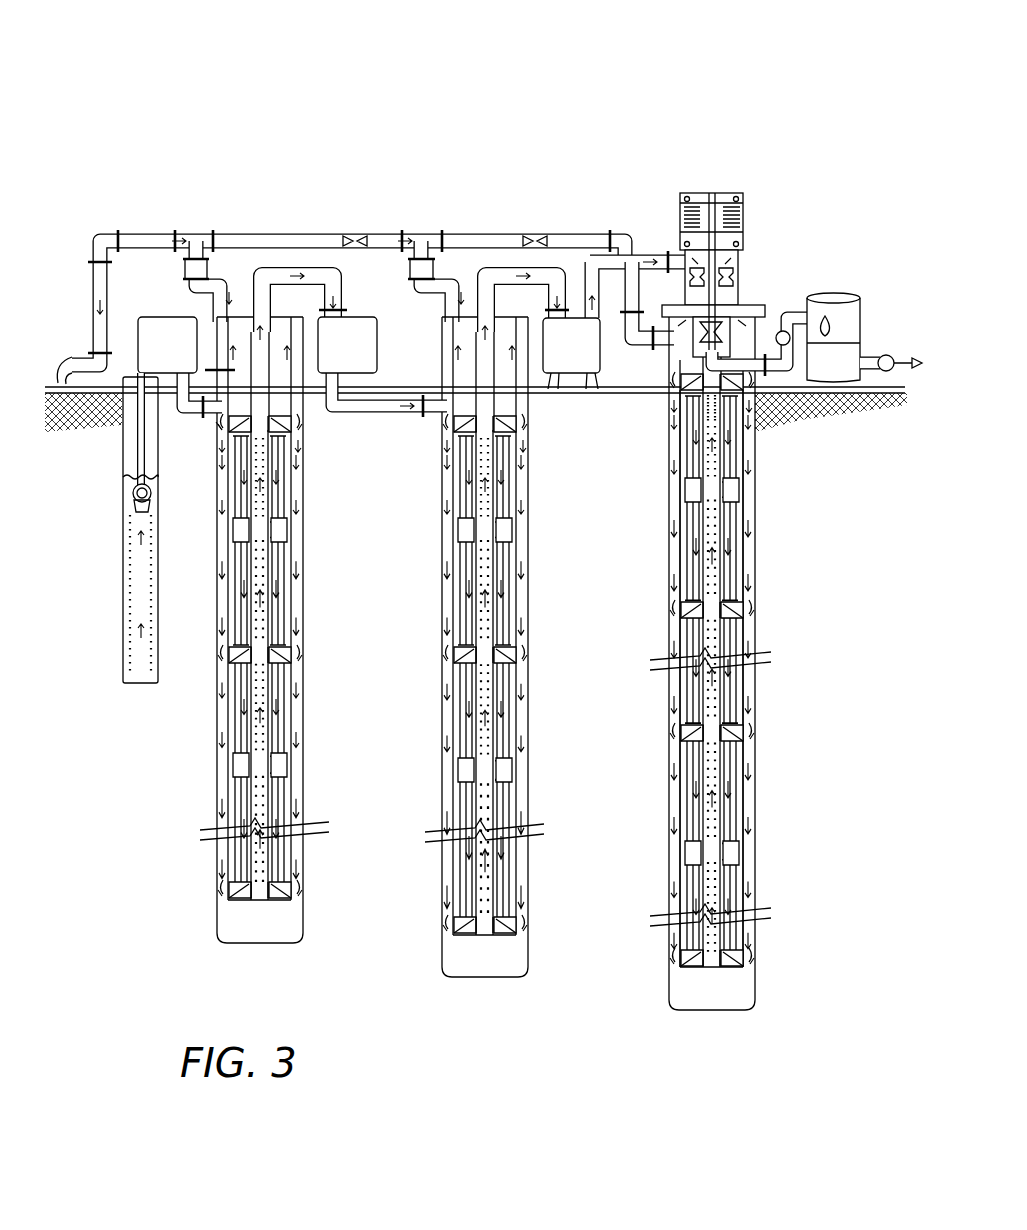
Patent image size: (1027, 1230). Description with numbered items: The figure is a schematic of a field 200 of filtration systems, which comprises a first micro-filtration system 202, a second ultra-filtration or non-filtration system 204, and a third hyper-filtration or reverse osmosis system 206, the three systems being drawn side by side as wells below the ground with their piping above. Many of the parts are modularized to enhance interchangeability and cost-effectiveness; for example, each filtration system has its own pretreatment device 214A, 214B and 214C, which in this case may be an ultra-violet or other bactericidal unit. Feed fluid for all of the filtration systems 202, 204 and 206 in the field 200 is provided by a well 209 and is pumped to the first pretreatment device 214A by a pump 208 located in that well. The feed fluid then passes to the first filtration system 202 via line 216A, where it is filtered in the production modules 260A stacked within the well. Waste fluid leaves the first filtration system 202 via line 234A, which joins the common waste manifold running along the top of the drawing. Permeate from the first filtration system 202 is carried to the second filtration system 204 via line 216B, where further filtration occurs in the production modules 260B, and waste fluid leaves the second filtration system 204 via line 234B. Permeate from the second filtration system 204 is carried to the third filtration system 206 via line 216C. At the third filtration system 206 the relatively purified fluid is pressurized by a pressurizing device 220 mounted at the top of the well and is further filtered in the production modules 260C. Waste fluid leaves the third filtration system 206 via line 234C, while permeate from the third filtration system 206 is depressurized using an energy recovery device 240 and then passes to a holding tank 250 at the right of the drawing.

The field of filtration systems 200 is at (200, 140).
The first micro-filtration system 202 is at (320, 175).
The second ultra-filtration or non-filtration system 204 is at (543, 175).
The third hyper-filtration or reverse osmosis system 206 is at (770, 155).
The pump 208 is at (130, 493).
The well 209 is at (122, 584).
The first pretreatment device 214A is at (138, 335).
The second pretreatment device 214B is at (412, 340).
The third pretreatment device 214C is at (573, 375).
The line 216A is at (186, 425).
The line 216B is at (386, 418).
The line 216C is at (665, 257).
The pressurizing device 220 is at (758, 310).
The line 234A is at (188, 290).
The line 234B is at (412, 290).
The line 234C is at (624, 338).
The energy recovery device 240 is at (756, 320).
The holding tank 250 is at (862, 324).
The production modules 260A is at (310, 905).
The production modules 260B is at (535, 935).
The production modules 260C is at (762, 967).